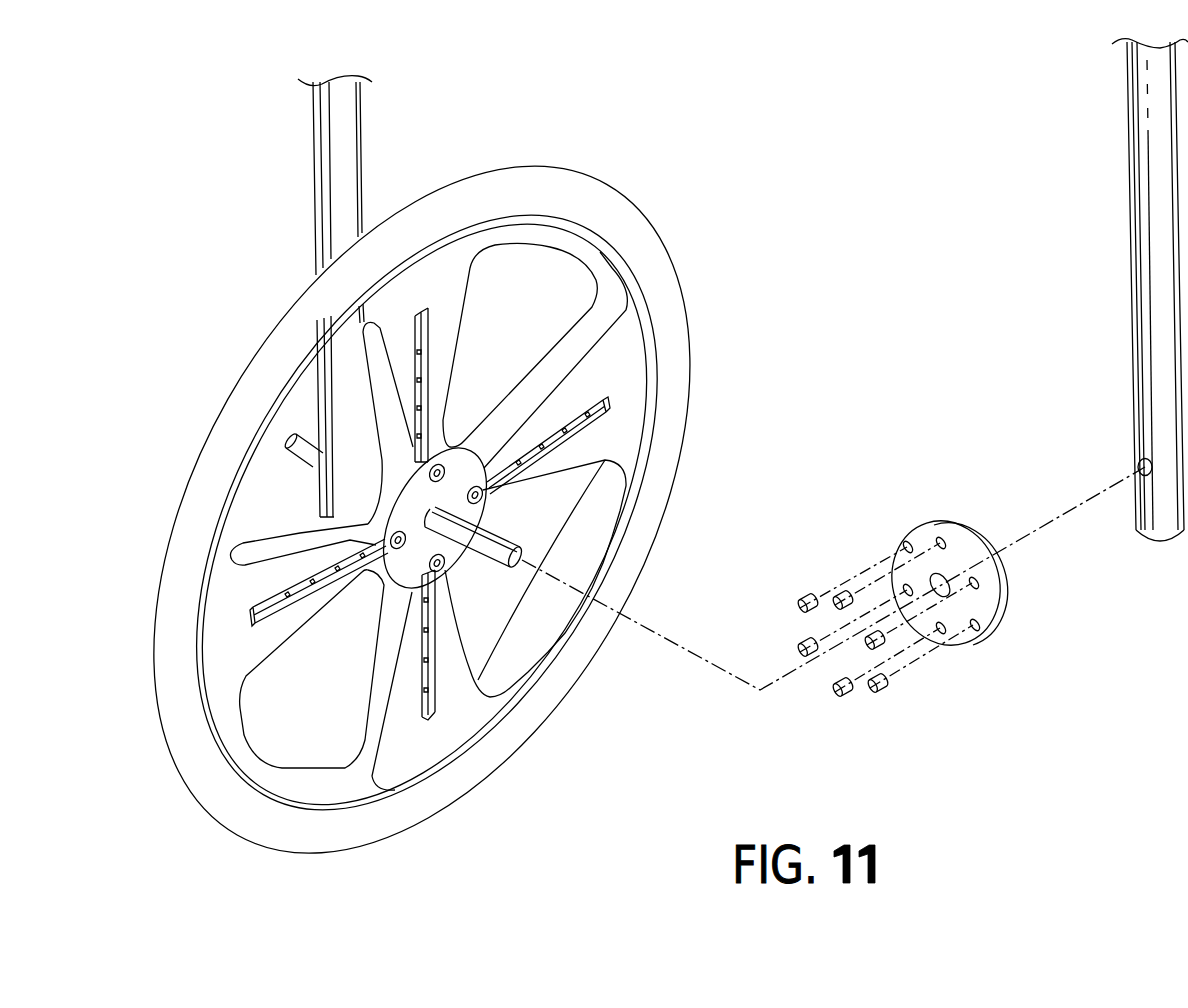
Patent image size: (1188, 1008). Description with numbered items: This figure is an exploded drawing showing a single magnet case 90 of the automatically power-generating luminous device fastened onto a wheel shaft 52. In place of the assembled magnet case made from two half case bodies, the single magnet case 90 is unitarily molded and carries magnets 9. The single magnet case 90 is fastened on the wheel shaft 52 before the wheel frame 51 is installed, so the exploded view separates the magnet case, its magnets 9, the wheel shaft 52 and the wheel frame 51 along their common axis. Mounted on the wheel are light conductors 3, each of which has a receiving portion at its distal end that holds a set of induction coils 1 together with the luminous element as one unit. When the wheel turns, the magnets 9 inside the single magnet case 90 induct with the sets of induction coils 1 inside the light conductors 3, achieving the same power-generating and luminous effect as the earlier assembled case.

The set of induction coils 1 is at (455, 572).
The light conductor 3 is at (437, 680).
The magnets 9 is at (882, 690).
The wheel frame 51 is at (1130, 222).
The wheel shaft 52 is at (522, 546).
The single magnet case 90 is at (915, 532).